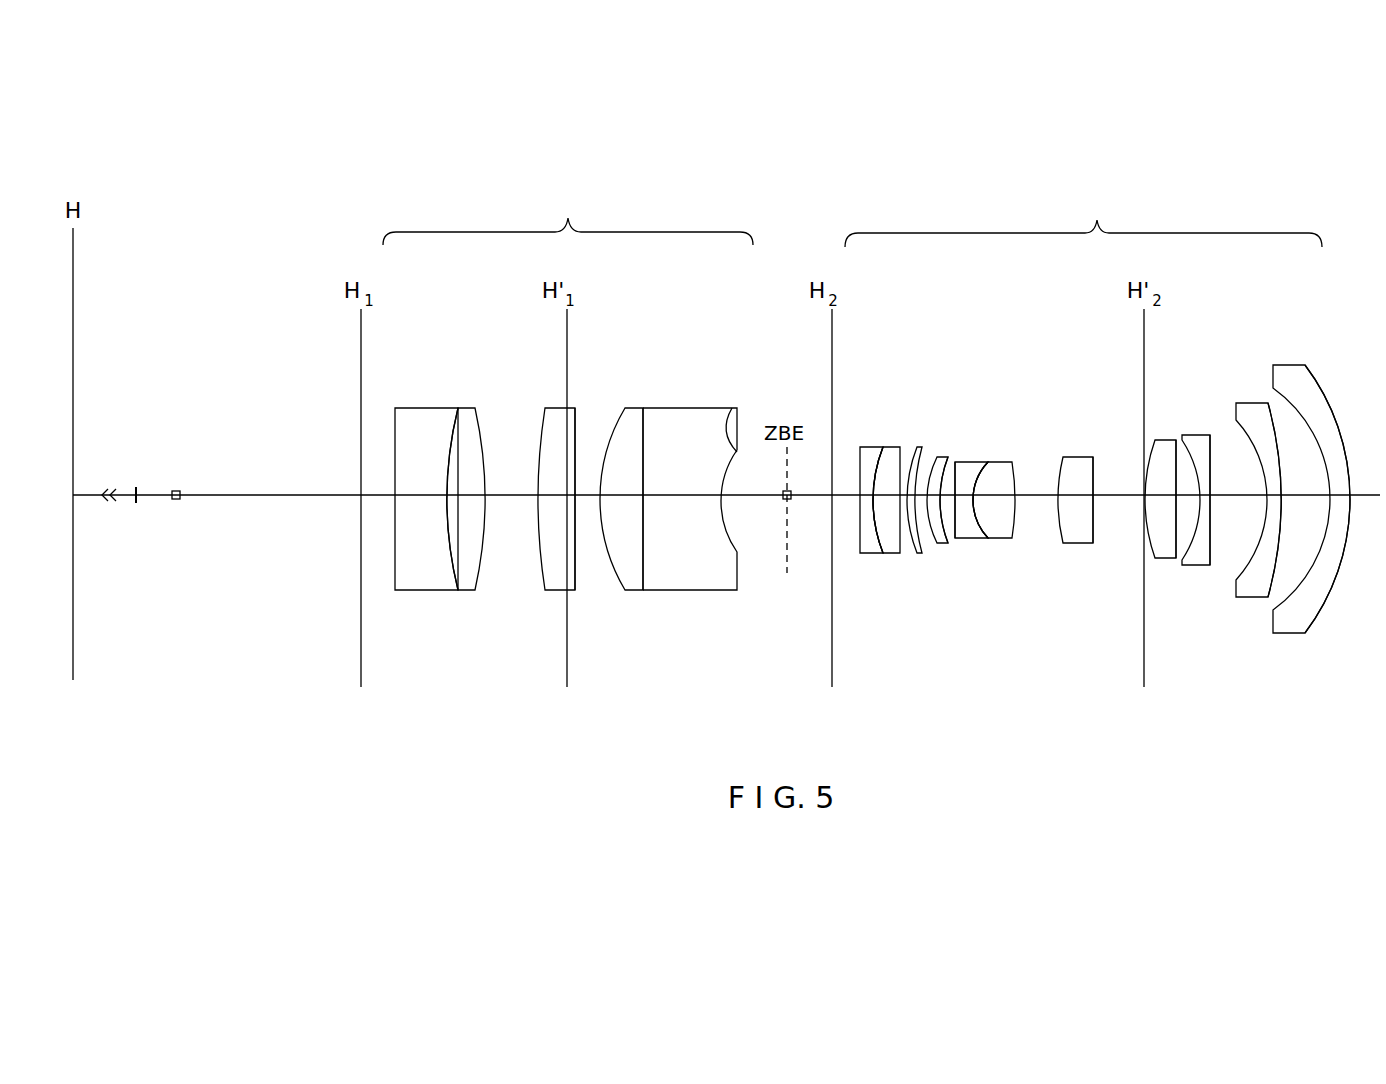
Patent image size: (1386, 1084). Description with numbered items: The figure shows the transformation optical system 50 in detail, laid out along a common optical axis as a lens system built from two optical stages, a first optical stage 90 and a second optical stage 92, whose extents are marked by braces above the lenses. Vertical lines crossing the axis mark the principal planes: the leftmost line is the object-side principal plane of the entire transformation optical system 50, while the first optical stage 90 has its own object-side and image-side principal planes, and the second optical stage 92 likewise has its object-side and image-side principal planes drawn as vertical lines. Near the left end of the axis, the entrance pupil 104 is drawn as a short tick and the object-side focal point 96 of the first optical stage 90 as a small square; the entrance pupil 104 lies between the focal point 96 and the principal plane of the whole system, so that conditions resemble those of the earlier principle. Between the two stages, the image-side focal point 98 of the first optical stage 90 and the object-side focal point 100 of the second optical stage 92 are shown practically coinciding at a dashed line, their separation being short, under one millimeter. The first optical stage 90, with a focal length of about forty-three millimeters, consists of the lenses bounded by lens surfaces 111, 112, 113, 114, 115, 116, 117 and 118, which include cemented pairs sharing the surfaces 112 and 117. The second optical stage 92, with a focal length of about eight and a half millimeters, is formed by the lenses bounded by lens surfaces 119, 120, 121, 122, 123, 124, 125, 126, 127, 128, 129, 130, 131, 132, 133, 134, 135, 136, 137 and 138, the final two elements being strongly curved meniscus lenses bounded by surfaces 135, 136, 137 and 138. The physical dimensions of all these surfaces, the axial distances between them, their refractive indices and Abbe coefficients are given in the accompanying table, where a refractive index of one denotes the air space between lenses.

The transformation optical system 50 is at (652, 714).
The first optical stage 90 is at (568, 216).
The second optical stage 92 is at (1083, 218).
The object-side focal point of the first optical stage 96 is at (176, 505).
The image-side focal point of the first optical stage 98 is at (777, 497).
The object-side focal point of the second optical stage 100 is at (793, 500).
The entrance pupil 104 is at (136, 505).
The lens surface 111 is at (410, 585).
The lens surface 112 is at (450, 418).
The lens surface 113 is at (477, 580).
The lens surface 114 is at (543, 414).
The lens surface 115 is at (575, 578).
The lens surface 116 is at (622, 412).
The lens surface 117 is at (645, 580).
The lens surface 118 is at (728, 408).
The lens surface 119 is at (860, 553).
The lens surface 120 is at (877, 453).
The lens surface 121 is at (905, 556).
The lens surface 122 is at (909, 448).
The lens surface 123 is at (936, 456).
The lens surface 124 is at (940, 543).
The lens surface 125 is at (953, 460).
The lens surface 126 is at (968, 540).
The lens surface 127 is at (998, 472).
The lens surface 128 is at (1012, 540).
The lens surface 129 is at (1062, 452).
The lens surface 130 is at (1093, 544).
The lens surface 131 is at (1152, 560).
The lens surface 132 is at (1175, 467).
The lens surface 133 is at (1192, 548).
The lens surface 134 is at (1213, 436).
The lens surface 135 is at (1257, 598).
The lens surface 136 is at (1273, 415).
The lens surface 137 is at (1292, 603).
The lens surface 138 is at (1342, 575).